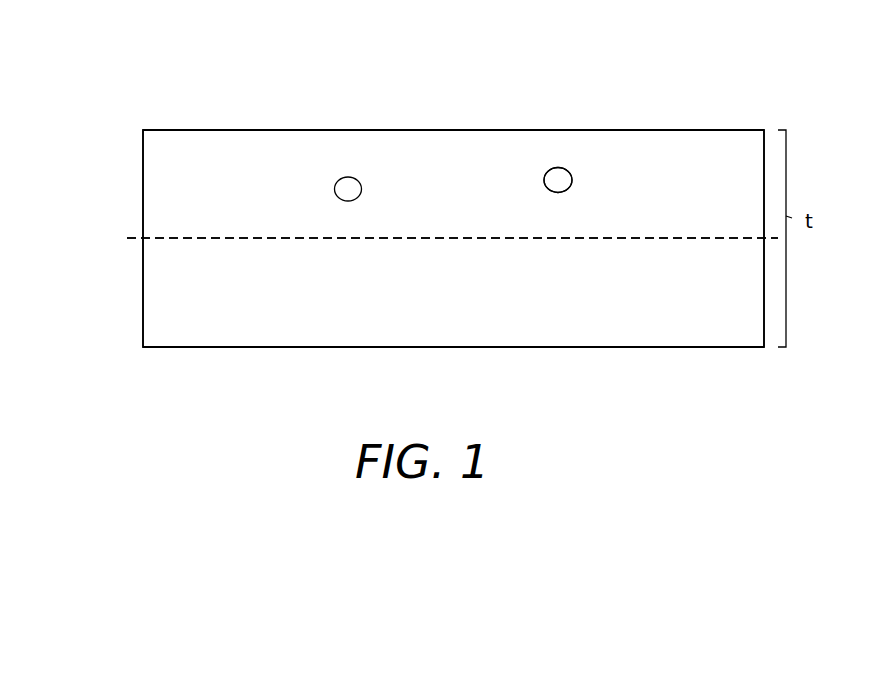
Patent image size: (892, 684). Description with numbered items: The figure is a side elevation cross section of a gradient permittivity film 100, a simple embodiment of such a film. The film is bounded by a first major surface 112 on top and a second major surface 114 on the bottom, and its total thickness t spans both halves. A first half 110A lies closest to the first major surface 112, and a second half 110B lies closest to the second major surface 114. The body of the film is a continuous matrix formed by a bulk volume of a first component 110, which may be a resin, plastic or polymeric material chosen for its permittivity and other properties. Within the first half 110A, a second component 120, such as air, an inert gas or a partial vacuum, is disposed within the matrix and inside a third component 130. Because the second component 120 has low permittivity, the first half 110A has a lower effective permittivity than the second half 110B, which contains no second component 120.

The gradient permittivity film 100 is at (136, 36).
The first component 110 is at (272, 148).
The first major surface 112 is at (651, 130).
The second major surface 114 is at (443, 347).
The first half 110A is at (168, 196).
The second half 110B is at (168, 286).
The second component 120 is at (558, 178).
The third component 130 is at (545, 182).